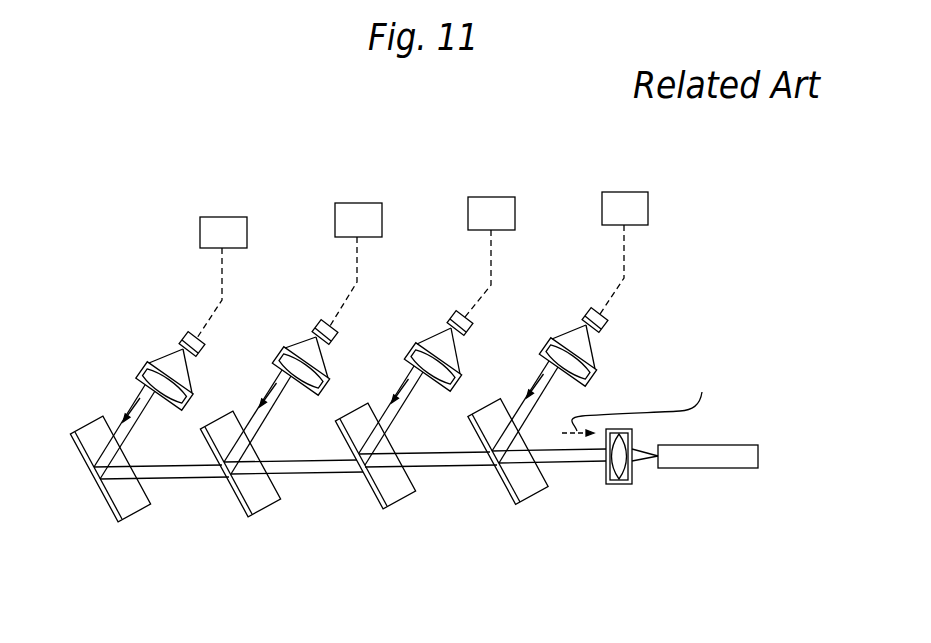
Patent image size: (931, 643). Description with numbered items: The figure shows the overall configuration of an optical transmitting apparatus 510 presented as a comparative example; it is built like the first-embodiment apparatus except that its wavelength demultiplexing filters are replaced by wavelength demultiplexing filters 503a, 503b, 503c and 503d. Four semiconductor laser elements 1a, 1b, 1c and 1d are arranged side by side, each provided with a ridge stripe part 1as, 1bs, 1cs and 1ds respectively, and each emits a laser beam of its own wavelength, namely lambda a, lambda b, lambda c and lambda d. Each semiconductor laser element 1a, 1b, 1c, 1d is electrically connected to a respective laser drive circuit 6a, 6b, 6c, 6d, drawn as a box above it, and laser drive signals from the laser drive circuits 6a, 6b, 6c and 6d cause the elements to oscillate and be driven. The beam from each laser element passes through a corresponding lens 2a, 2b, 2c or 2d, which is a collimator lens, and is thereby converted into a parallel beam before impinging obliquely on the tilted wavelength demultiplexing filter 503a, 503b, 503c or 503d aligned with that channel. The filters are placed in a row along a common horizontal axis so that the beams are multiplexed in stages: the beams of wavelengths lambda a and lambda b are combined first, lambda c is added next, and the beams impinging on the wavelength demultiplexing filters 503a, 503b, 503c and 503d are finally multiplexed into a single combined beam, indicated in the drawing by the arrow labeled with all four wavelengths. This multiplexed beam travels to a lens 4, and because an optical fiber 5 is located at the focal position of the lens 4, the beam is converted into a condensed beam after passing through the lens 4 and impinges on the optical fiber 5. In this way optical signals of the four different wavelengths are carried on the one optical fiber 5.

The optical transmitting apparatus 510 is at (108, 192).
The semiconductor laser element 1a is at (222, 272).
The semiconductor laser element 1b is at (357, 262).
The semiconductor laser element 1c is at (491, 256).
The semiconductor laser element 1d is at (624, 250).
The ridge stripe part 1as is at (197, 333).
The ridge stripe part 1bs is at (330, 323).
The ridge stripe part 1cs is at (465, 314).
The ridge stripe part 1ds is at (600, 311).
The lens 2a is at (141, 369).
The lens 2b is at (277, 354).
The lens 2c is at (409, 350).
The lens 2d is at (544, 345).
The wavelength demultiplexing filter 503a is at (104, 495).
The wavelength demultiplexing filter 503b is at (234, 490).
The wavelength demultiplexing filter 503c is at (369, 482).
The wavelength demultiplexing filter 503d is at (501, 478).
The laser drive circuit 6a is at (247, 231).
The laser drive circuit 6b is at (382, 221).
The laser drive circuit 6c is at (515, 215).
The laser drive circuit 6d is at (648, 210).
The lens 4 is at (618, 487).
The optical fiber 5 is at (707, 470).